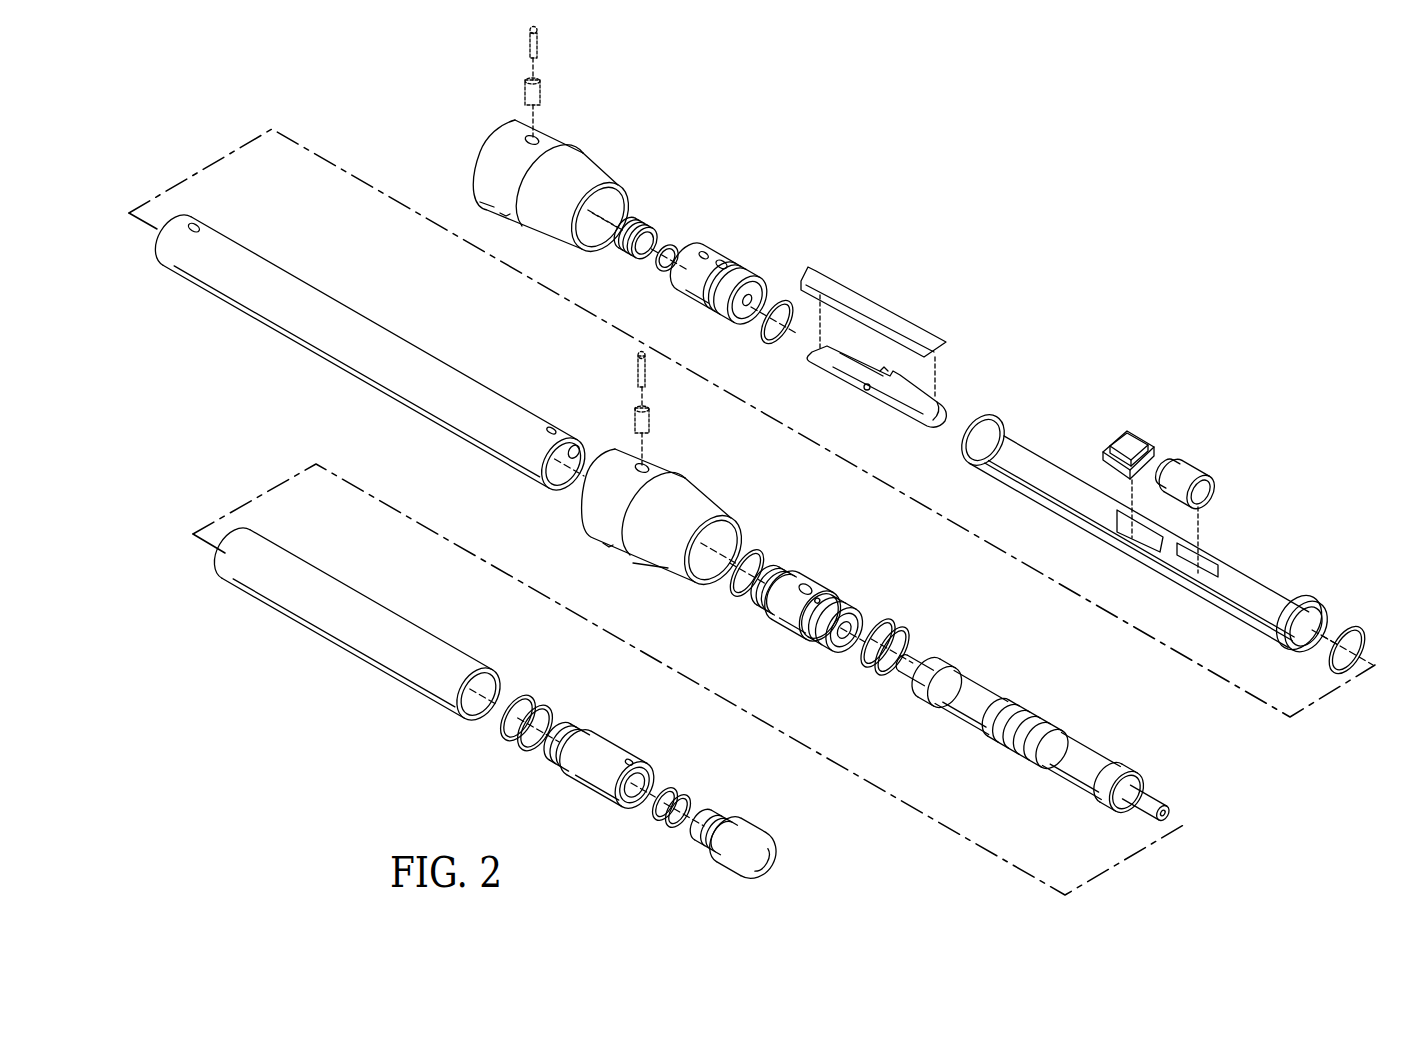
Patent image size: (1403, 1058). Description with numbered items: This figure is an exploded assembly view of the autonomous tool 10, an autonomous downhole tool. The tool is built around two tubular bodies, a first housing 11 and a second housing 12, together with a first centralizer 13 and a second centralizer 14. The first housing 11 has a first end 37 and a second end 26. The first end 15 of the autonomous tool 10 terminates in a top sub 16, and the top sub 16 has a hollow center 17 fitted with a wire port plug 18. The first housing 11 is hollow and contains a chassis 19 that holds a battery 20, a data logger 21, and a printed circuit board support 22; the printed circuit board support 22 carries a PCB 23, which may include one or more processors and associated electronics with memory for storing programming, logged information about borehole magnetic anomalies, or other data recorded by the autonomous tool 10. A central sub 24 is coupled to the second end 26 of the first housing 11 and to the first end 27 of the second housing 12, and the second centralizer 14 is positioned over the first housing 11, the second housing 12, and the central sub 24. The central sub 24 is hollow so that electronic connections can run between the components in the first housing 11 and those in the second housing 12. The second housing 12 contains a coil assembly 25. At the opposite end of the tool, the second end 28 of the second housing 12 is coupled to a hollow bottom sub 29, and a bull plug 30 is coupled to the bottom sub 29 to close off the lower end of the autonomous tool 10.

The autonomous tool 10 is at (1066, 180).
The first housing 11 is at (360, 378).
The second housing 12 is at (345, 657).
The first centralizer 13 is at (562, 136).
The second centralizer 14 is at (665, 463).
The first end 15 is at (688, 233).
The top sub 16 is at (715, 249).
The hollow center 17 is at (762, 290).
The wire port plug 18 is at (645, 221).
The chassis 19 is at (1031, 453).
The battery 20 is at (1193, 467).
The data logger 21 is at (1135, 443).
The printed circuit board support 22 is at (885, 403).
The PCB 23 is at (898, 322).
The central sub 24 is at (822, 580).
The coil assembly 25 is at (1056, 706).
The second end 26 is at (543, 491).
The first end 27 is at (233, 592).
The second end 28 is at (460, 720).
The bottom sub 29 is at (598, 803).
The bull plug 30 is at (730, 875).
The first end 37 is at (172, 273).